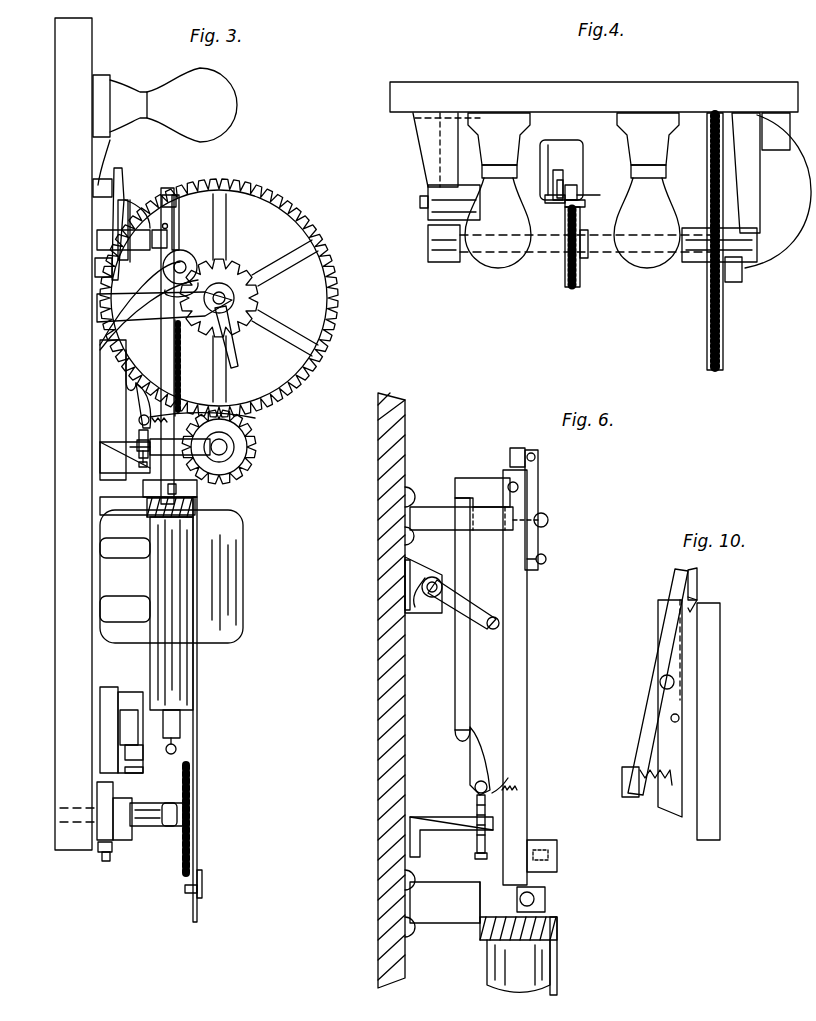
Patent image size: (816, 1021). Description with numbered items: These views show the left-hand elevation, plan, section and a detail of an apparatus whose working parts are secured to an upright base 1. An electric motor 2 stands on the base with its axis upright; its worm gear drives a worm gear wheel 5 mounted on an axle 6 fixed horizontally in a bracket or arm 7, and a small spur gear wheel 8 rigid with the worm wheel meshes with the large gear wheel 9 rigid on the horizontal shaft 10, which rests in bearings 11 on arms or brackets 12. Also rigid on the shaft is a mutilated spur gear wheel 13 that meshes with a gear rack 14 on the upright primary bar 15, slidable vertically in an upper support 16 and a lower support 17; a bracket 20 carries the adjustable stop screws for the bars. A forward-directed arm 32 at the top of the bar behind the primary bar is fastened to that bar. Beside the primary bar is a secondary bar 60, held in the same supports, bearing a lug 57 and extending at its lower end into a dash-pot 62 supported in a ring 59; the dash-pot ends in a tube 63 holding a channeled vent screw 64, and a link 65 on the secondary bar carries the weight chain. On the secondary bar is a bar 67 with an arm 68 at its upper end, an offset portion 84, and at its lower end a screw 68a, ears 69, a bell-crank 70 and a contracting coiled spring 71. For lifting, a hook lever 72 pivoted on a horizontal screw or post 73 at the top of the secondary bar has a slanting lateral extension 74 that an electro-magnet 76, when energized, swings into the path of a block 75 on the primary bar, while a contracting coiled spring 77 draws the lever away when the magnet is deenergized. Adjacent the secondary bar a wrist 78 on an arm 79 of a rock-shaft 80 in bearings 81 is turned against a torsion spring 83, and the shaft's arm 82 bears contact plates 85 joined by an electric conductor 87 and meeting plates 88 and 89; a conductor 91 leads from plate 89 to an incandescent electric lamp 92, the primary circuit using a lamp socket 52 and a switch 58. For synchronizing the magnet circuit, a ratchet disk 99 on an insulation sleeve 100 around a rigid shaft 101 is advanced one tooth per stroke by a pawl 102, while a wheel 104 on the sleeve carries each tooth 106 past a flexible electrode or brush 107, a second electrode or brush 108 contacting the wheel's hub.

In FIG. 3, the upright base 1 is at (62, 642).
In FIG. 4, the upright base 1 is at (605, 92).
In FIG. 6, the upright base 1 is at (385, 655).
In FIG. 3, the electric motor 2 is at (232, 595).
In FIG. 4, the electric motor 2 is at (770, 240).
In FIG. 3, the worm gear wheel 5 is at (244, 462).
In FIG. 4, the worm gear wheel 5 is at (733, 282).
In FIG. 3, the axle 6 is at (240, 446).
In FIG. 3, the bracket or arm 7 is at (235, 440).
In FIG. 3, the small spur gear wheel 8 is at (248, 452).
In FIG. 3, the large gear wheel 9 is at (340, 300).
In FIG. 4, the large gear wheel 9 is at (715, 370).
In FIG. 3, the horizontal shaft 10 is at (225, 305).
In FIG. 4, the horizontal shaft 10 is at (548, 252).
In FIG. 3, the bearings 11 is at (234, 366).
In FIG. 4, the bearings 11 is at (440, 262).
In FIG. 3, the arms or brackets 12 is at (118, 314).
In FIG. 4, the arms or brackets 12 is at (430, 150).
In FIG. 3, the mutilated spur gear wheel 13 is at (255, 299).
In FIG. 4, the mutilated spur gear wheel 13 is at (582, 278).
In FIG. 3, the gear rack 14 is at (182, 375).
In FIG. 4, the gear rack 14 is at (578, 204).
In FIG. 4, the primary bar 15 is at (583, 195).
In FIG. 10, the primary bar 15 is at (720, 670).
In FIG. 3, the upper support 16 is at (120, 240).
In FIG. 4, the upper support 16 is at (577, 188).
In FIG. 6, the upper support 16 is at (470, 514).
In FIG. 3, the lower support 17 is at (160, 498).
In FIG. 6, the lower support 17 is at (470, 905).
In FIG. 3, the bracket 20 is at (100, 450).
In FIG. 6, the bracket 20 is at (430, 835).
In FIG. 4, the forward-directed arm 32 is at (583, 162).
In FIG. 4, the incandescent lamp socket 52 is at (658, 135).
In FIG. 3, the lug 57 is at (258, 420).
In FIG. 6, the lug 57 is at (500, 782).
In FIG. 3, the switch 58 is at (140, 466).
In FIG. 6, the switch 58 is at (490, 843).
In FIG. 3, the ring 59 is at (193, 507).
In FIG. 6, the ring 59 is at (558, 930).
In FIG. 3, the secondary bar 60 is at (160, 380).
In FIG. 6, the secondary bar 60 is at (520, 660).
In FIG. 10, the secondary bar 60 is at (672, 745).
In FIG. 3, the dash-pot 62 is at (175, 562).
In FIG. 6, the dash-pot 62 is at (540, 966).
In FIG. 3, the tube 63 is at (181, 720).
In FIG. 3, the channeled vent screw 64 is at (177, 748).
In FIG. 3, the link 65 is at (197, 686).
In FIG. 6, the link 65 is at (558, 990).
In FIG. 3, the bar 67 is at (126, 355).
In FIG. 6, the bar 67 is at (460, 720).
In FIG. 3, the arm 68 is at (118, 222).
In FIG. 4, the arm 68 is at (545, 155).
In FIG. 6, the arm 68 is at (478, 478).
In FIG. 3, the screw 68a is at (138, 438).
In FIG. 6, the screw 68a is at (476, 790).
In FIG. 3, the ears 69 is at (138, 420).
In FIG. 6, the ears 69 is at (475, 776).
In FIG. 3, the bell-crank 70 is at (138, 408).
In FIG. 6, the bell-crank 70 is at (482, 750).
In FIG. 3, the contracting coiled spring 71 is at (168, 424).
In FIG. 6, the contracting coiled spring 71 is at (518, 792).
In FIG. 3, the hook lever 72 is at (180, 220).
In FIG. 4, the hook lever 72 is at (555, 204).
In FIG. 6, the hook lever 72 is at (540, 478).
In FIG. 10, the hook lever 72 is at (668, 628).
In FIG. 6, the horizontal screw or post 73 is at (548, 520).
In FIG. 10, the horizontal screw or post 73 is at (660, 683).
In FIG. 3, the slanting lateral extension 74 is at (170, 196).
In FIG. 4, the slanting lateral extension 74 is at (558, 170).
In FIG. 6, the slanting lateral extension 74 is at (518, 448).
In FIG. 10, the slanting lateral extension 74 is at (697, 580).
In FIG. 10, the block 75 is at (700, 600).
In FIG. 3, the electro-magnet 76 is at (198, 262).
In FIG. 4, the electro-magnet 76 is at (445, 195).
In FIG. 6, the contracting coiled spring 77 is at (548, 559).
In FIG. 10, the contracting coiled spring 77 is at (676, 780).
In FIG. 6, the wrist 78 is at (500, 622).
In FIG. 6, the arm 79 is at (470, 612).
In FIG. 6, the rock-shaft 80 is at (434, 598).
In FIG. 6, the bearings 81 is at (422, 572).
In FIG. 3, the arm 82 is at (128, 225).
In FIG. 6, the torsion spring 83 is at (422, 612).
In FIG. 3, the offset portion 84 is at (120, 366).
In FIG. 6, the offset portion 84 is at (462, 670).
In FIG. 3, the contact plates 85 is at (123, 185).
In FIG. 3, the electric conductor 87 is at (145, 218).
In FIG. 3, the plate 88 is at (96, 270).
In FIG. 3, the plate 89 is at (110, 183).
In FIG. 3, the conductor 91 is at (112, 142).
In FIG. 3, the incandescent electric lamp 92 is at (128, 92).
In FIG. 4, the incandescent electric lamp 92 is at (515, 113).
In FIG. 3, the ratchet disk 99 is at (182, 875).
In FIG. 3, the insulation sleeve 100 is at (150, 830).
In FIG. 3, the rigid shaft 101 is at (168, 830).
In FIG. 3, the pawl 102 is at (202, 892).
In FIG. 3, the wheel 104 is at (98, 855).
In FIG. 3, the tooth 106 is at (105, 862).
In FIG. 3, the flexible electrode or brush 107 is at (98, 792).
In FIG. 3, the electrode or brush 108 is at (124, 842).